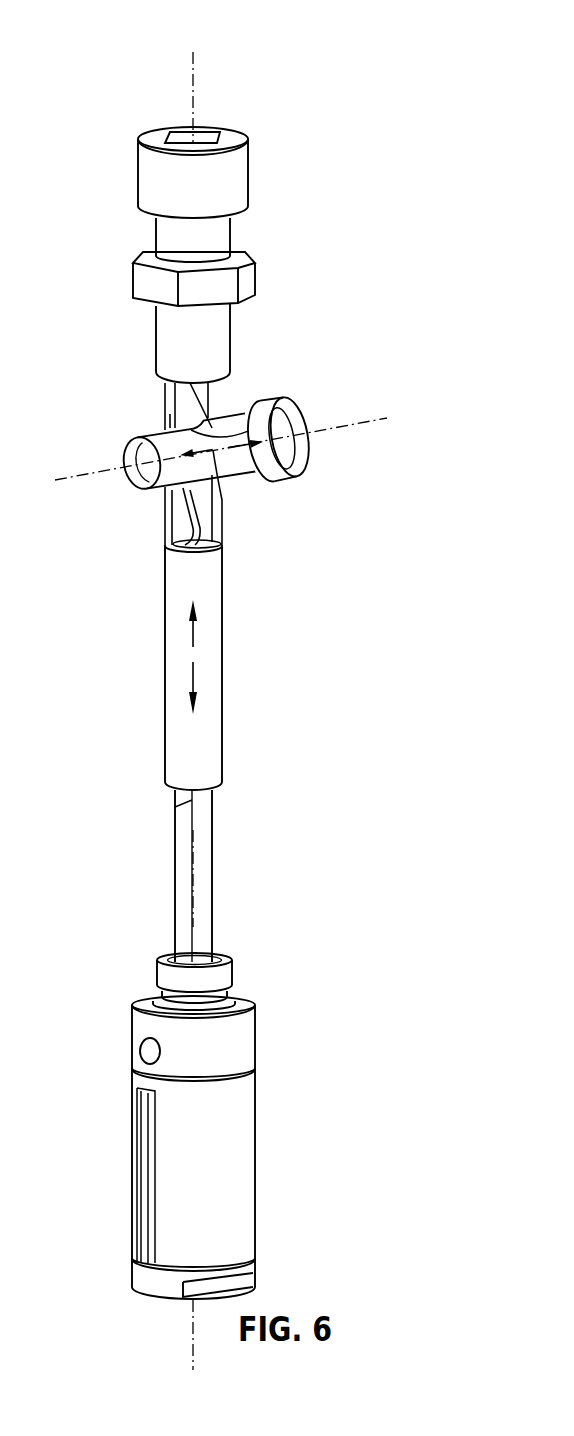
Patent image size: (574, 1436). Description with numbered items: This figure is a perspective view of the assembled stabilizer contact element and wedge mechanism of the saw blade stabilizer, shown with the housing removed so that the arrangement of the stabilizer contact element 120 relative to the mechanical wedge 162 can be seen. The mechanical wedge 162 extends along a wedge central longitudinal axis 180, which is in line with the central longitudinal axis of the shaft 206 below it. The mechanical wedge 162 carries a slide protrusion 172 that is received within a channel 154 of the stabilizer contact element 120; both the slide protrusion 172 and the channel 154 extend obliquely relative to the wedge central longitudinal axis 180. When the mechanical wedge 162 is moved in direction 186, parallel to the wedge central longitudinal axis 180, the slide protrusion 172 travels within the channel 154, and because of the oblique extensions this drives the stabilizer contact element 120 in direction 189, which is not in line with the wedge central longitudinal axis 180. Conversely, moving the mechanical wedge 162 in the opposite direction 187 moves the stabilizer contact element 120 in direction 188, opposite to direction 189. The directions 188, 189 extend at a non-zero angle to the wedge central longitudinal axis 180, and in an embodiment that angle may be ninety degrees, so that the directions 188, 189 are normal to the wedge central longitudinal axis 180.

The wedge central longitudinal axis 180 is at (194, 67).
The slide protrusion 172 is at (183, 402).
The stabilizer contact element 120 is at (140, 485).
The channel 154 is at (303, 430).
The direction 188 is at (216, 454).
The direction 189 is at (243, 450).
The mechanical wedge 162 is at (178, 597).
The direction 186 is at (193, 640).
The direction 187 is at (193, 672).
The shaft 206 is at (195, 877).